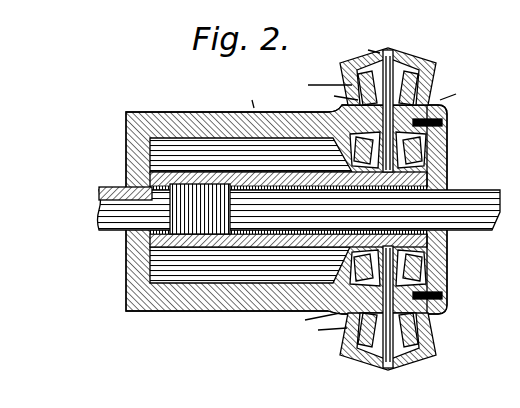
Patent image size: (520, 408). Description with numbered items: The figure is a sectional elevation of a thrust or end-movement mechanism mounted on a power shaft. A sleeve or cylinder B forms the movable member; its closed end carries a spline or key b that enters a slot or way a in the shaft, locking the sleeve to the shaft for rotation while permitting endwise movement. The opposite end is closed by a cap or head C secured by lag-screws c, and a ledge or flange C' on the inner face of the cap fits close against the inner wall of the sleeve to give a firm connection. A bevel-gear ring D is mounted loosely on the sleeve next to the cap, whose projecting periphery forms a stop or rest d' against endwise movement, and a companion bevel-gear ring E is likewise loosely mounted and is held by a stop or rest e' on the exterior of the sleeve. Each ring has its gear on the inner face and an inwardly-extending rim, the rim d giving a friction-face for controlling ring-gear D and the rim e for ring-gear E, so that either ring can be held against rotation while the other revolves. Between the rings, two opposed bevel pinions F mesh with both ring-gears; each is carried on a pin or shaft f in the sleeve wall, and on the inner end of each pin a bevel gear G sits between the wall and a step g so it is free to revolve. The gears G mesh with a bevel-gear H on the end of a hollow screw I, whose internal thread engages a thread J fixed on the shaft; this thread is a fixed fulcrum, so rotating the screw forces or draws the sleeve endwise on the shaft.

The slot or way a is at (288, 206).
The spline or key b is at (128, 186).
The sleeve or cylinder B is at (286, 203).
The hollow screw I is at (249, 98).
The thread J is at (148, 233).
The cap or head C is at (309, 155).
The ledge or flange C' is at (311, 204).
The lag-screws c is at (445, 119).
The inwardly-extending rim d is at (400, 213).
The stop or rest d' is at (455, 95).
The bevel-gear ring D is at (432, 80).
The inwardly-extending rim e is at (336, 216).
The stop or rest e' is at (335, 98).
The companion bevel-gear ring E is at (352, 74).
The pin or shaft f is at (322, 214).
The bevel pinion or gear F is at (436, 63).
The step g is at (447, 250).
The bevel gear or pinion G is at (447, 135).
The bevel-gear H is at (447, 174).